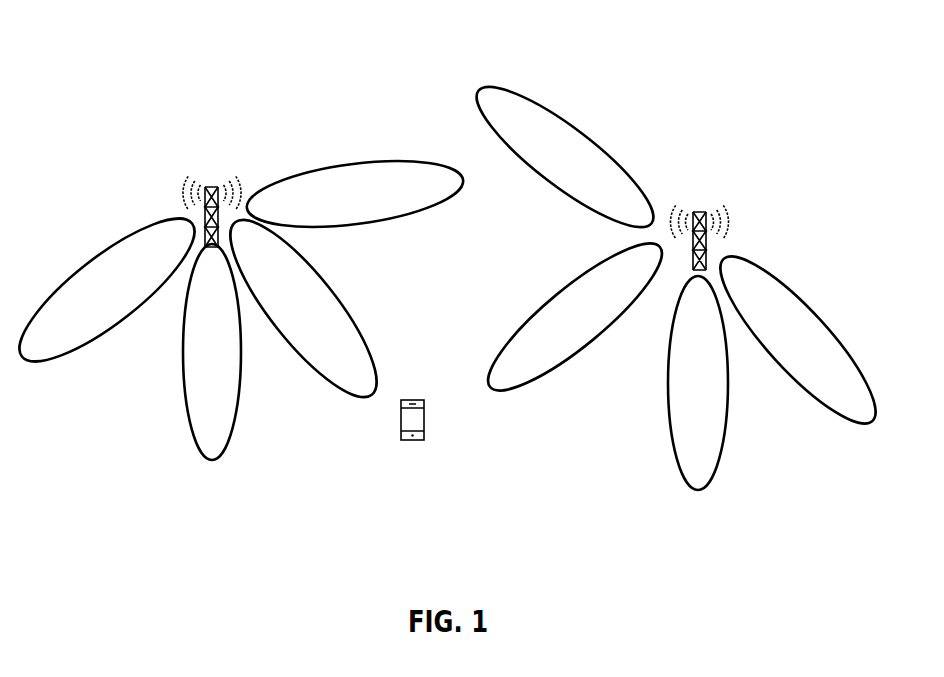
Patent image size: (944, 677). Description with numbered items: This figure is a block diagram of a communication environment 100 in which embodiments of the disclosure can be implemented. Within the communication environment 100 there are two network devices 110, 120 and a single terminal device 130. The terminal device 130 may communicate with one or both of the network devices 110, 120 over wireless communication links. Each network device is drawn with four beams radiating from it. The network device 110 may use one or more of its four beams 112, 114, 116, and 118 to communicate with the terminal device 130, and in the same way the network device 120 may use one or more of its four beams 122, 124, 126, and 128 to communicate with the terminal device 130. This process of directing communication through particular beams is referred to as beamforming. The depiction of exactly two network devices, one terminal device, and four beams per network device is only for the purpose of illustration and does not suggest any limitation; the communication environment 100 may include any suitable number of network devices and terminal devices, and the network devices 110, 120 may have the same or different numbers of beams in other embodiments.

The communication environment 100 is at (182, 38).
The network device 110 is at (215, 187).
The beam 112 is at (98, 260).
The beam 114 is at (182, 352).
The beam 116 is at (330, 292).
The beam 118 is at (384, 166).
The network device 120 is at (700, 213).
The beam 122 is at (551, 112).
The beam 124 is at (552, 300).
The beam 126 is at (668, 410).
The beam 128 is at (816, 313).
The terminal device 130 is at (420, 400).